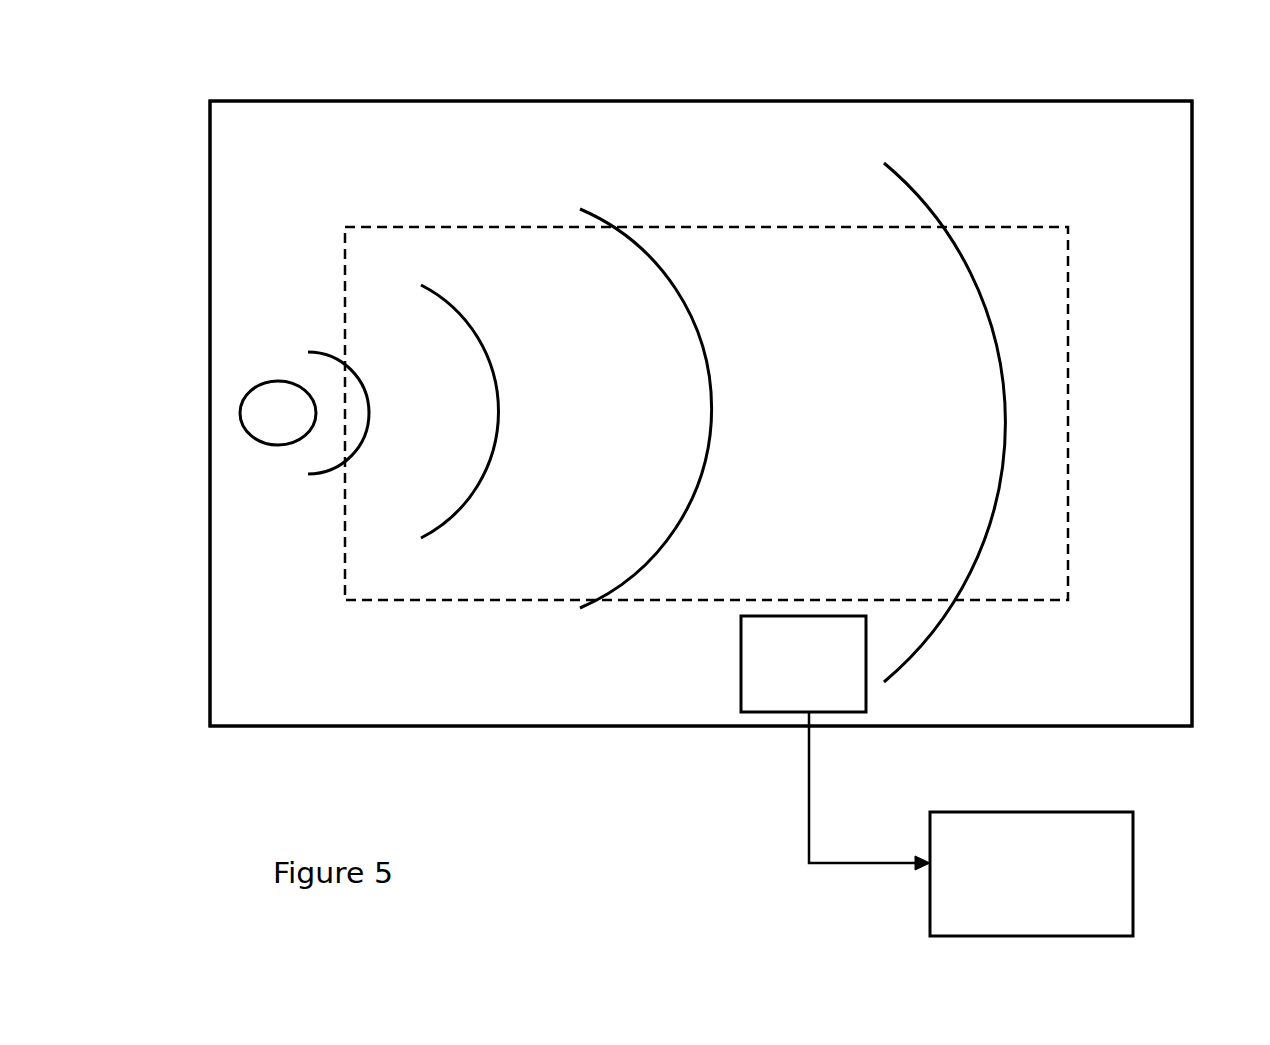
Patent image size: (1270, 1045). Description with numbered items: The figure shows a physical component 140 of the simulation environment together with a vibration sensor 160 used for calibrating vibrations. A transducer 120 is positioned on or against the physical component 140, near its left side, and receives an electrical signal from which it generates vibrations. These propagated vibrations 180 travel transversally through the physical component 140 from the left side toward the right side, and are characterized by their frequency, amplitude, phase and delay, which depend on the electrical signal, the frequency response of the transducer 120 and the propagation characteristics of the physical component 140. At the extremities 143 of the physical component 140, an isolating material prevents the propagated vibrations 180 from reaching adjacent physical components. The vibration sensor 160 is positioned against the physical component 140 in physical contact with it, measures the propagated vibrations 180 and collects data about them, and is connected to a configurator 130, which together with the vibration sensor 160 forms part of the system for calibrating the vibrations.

The physical component 140 is at (171, 56).
The extremities 143 is at (675, 101).
The transducer 120 is at (240, 413).
The propagated vibrations 180 is at (360, 438).
The vibration sensor 160 is at (822, 702).
The configurator 130 is at (1013, 900).